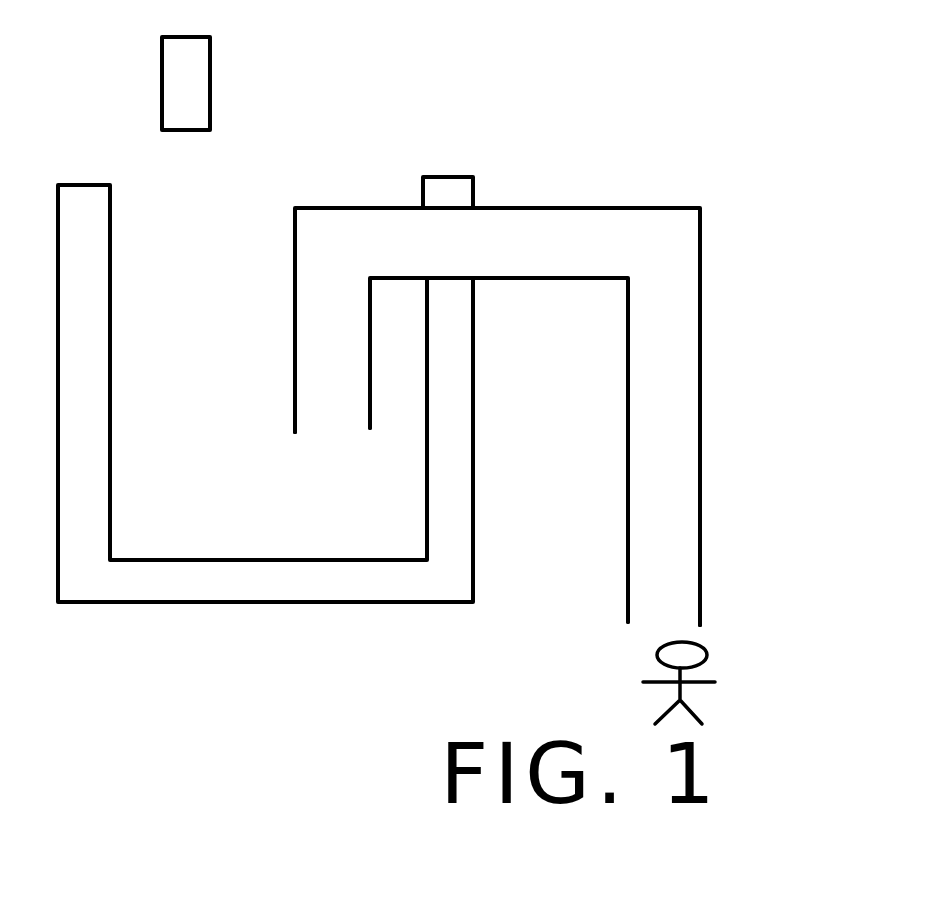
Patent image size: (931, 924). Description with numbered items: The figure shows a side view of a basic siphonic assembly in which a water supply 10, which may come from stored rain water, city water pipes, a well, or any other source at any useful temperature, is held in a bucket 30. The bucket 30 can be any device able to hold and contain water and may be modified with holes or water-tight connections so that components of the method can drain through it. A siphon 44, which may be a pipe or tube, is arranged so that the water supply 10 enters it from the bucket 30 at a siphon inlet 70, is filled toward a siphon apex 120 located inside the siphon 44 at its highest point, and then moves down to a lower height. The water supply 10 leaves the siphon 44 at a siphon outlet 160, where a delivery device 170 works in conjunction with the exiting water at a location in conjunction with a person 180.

The water supply 10 is at (185, 78).
The bucket 30 is at (110, 249).
The siphon 44 is at (333, 372).
The siphon inlet 70 is at (333, 423).
The siphon apex 120 is at (435, 246).
The siphon outlet 160 is at (630, 622).
The delivery device 170 is at (675, 625).
The person 180 is at (658, 665).